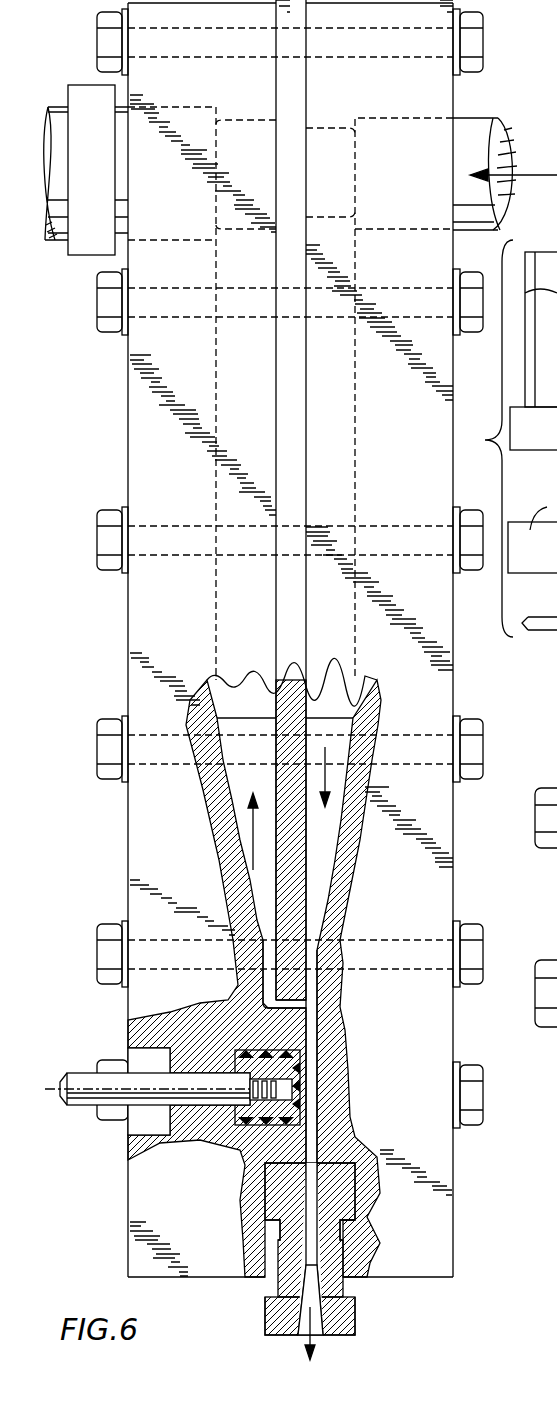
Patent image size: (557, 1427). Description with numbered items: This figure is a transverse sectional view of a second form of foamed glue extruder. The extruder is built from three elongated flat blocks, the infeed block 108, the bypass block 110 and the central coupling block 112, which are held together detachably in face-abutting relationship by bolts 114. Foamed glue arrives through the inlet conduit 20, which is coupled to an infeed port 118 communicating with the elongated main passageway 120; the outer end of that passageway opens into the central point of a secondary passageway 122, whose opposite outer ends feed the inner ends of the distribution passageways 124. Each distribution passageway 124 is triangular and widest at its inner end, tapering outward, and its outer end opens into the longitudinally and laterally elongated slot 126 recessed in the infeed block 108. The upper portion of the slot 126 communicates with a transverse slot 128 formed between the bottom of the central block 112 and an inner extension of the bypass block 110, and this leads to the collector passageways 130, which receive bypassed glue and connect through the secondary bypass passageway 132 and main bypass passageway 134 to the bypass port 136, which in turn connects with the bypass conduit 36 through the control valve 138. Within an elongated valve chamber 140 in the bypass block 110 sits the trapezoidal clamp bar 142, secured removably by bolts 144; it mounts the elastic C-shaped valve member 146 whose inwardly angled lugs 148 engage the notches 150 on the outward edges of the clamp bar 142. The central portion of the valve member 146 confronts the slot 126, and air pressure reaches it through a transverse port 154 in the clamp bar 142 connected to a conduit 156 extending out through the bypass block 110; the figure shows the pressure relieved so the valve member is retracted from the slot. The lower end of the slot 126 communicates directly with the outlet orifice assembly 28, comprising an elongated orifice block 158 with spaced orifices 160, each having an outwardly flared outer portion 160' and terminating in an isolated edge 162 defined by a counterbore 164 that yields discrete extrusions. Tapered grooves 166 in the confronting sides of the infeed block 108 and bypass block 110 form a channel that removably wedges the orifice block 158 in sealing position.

The foam inlet conduit 20 is at (470, 130).
The outlet orifice assembly 28 is at (377, 1311).
The bypass conduit 36 is at (58, 125).
The infeed block 108 is at (410, 435).
The bypass block 110 is at (167, 472).
The central coupling block 112 is at (300, 492).
The bolts 114 is at (113, 327).
The infeed port 118 is at (398, 118).
The main passageway 120 is at (325, 128).
The secondary passageway 122 is at (328, 698).
The distribution passageway 124 is at (317, 845).
The slot 126 is at (312, 1040).
The transverse slot 128 is at (295, 1012).
The collector passageway 130 is at (250, 848).
The secondary bypass passageway 132 is at (243, 693).
The main bypass passageway 134 is at (254, 120).
The bypass port 136 is at (193, 107).
The control valve 138 is at (90, 105).
The valve chamber 140 is at (300, 1147).
The clamp bar 142 is at (298, 1068).
The bolts 144 is at (548, 965).
The valve member 146 is at (210, 1012).
The lugs 148 is at (253, 1117).
The notches 150 is at (247, 1124).
The transverse port 154 is at (287, 1090).
The conduit 156 is at (80, 1073).
The orifice block 158 is at (265, 1315).
The orifices 160 is at (350, 1230).
The outer portion of orifice 160' is at (369, 1261).
The isolated edge 162 is at (297, 1335).
The counterbore 164 is at (323, 1335).
The tapered grooves 166 is at (265, 1255).